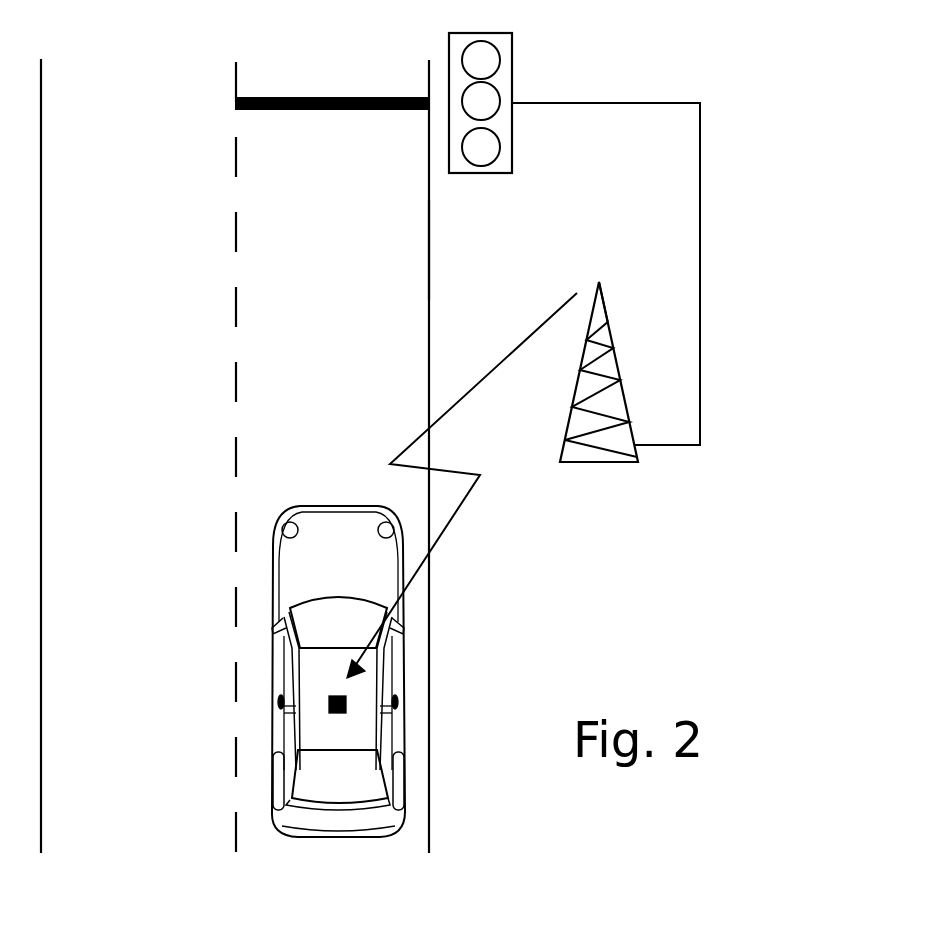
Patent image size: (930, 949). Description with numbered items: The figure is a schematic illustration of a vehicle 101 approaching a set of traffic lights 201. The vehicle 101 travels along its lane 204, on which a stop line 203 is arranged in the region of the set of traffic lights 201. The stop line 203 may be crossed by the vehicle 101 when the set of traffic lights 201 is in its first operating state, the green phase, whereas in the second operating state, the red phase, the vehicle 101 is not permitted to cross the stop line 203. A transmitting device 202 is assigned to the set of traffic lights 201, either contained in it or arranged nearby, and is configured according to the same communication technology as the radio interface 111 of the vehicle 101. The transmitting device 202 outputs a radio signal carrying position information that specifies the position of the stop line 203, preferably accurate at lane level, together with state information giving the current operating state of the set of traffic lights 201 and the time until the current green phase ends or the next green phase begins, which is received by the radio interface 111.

The vehicle 101 is at (250, 528).
The radio interface 111 is at (330, 712).
The set of traffic lights 201 is at (513, 48).
The transmitting device 202 is at (589, 464).
The stop line 203 is at (295, 97).
The lane 204 is at (378, 249).